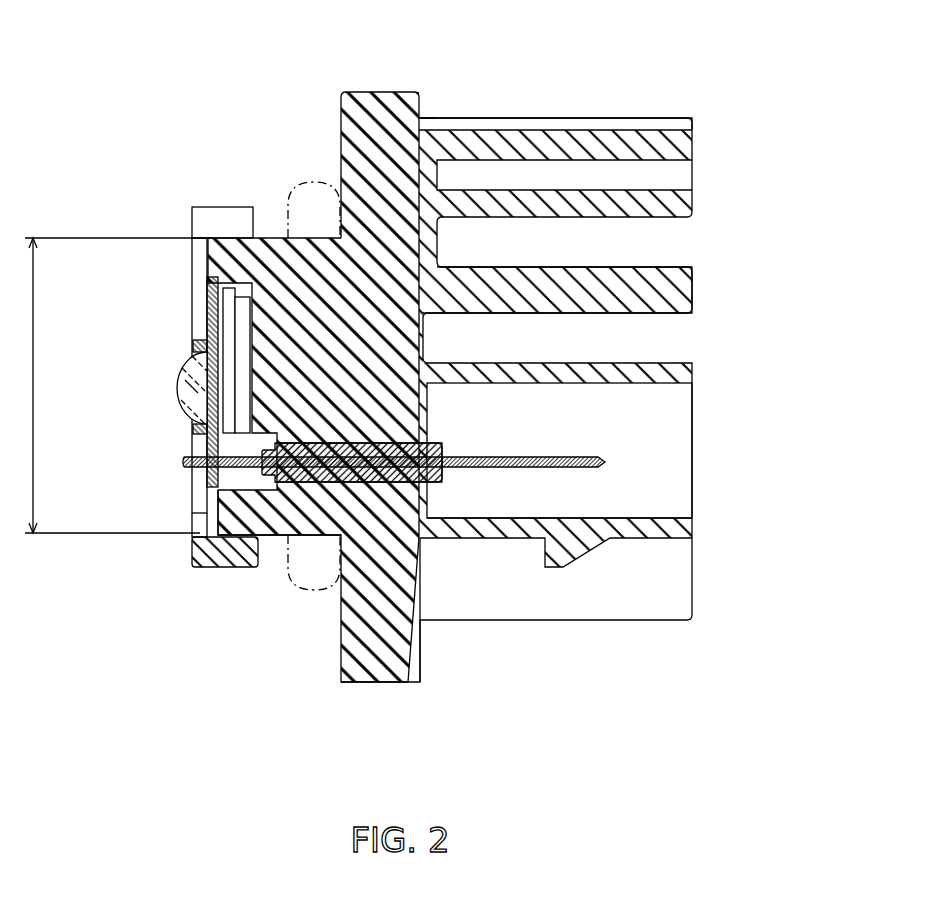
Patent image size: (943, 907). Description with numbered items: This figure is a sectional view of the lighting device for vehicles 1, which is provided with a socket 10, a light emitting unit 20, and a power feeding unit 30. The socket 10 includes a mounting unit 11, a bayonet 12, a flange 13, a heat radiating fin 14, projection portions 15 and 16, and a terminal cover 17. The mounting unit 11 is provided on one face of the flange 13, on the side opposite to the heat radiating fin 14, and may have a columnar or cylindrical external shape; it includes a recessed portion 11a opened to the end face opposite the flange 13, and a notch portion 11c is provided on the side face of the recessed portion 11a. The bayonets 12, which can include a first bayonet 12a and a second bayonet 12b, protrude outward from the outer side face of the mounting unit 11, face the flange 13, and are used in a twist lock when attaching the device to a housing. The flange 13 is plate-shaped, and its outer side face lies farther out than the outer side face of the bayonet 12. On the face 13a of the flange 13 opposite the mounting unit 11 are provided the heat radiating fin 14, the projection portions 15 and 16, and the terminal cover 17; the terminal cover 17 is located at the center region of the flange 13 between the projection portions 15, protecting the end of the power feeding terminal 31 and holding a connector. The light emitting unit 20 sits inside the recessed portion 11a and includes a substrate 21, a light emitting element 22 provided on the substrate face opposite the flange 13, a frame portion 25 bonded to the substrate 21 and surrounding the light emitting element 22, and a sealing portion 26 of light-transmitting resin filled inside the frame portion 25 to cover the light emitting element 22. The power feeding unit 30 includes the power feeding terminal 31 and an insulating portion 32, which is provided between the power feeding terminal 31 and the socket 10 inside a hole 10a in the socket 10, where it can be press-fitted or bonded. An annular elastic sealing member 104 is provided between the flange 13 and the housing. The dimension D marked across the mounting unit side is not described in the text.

The lighting device for vehicles 1 is at (405, 403).
The socket 10 is at (377, 690).
The hole 10a is at (345, 468).
The mounting unit 11 is at (213, 429).
The recessed portion 11a is at (198, 320).
The notch portion 11c is at (200, 537).
The bayonet 12 is at (211, 414).
The first bayonet 12a is at (213, 557).
The second bayonet 12b is at (222, 222).
The flange 13 is at (380, 120).
The face of the flange 13a is at (426, 102).
The heat radiating fin 14 is at (672, 295).
The projection portion 15 is at (637, 622).
The projection portion 16 is at (661, 130).
The terminal cover 17 is at (642, 527).
The light emitting unit 20 is at (137, 377).
The substrate 21 is at (213, 305).
The light emitting element 22 is at (203, 387).
The frame portion 25 is at (192, 428).
The sealing portion 26 is at (190, 402).
The power feeding unit 30 is at (394, 587).
The power feeding terminal 31 is at (517, 470).
The insulating portion 32 is at (392, 482).
The sealing member 104 is at (310, 180).
The dimension D is at (110, 385).